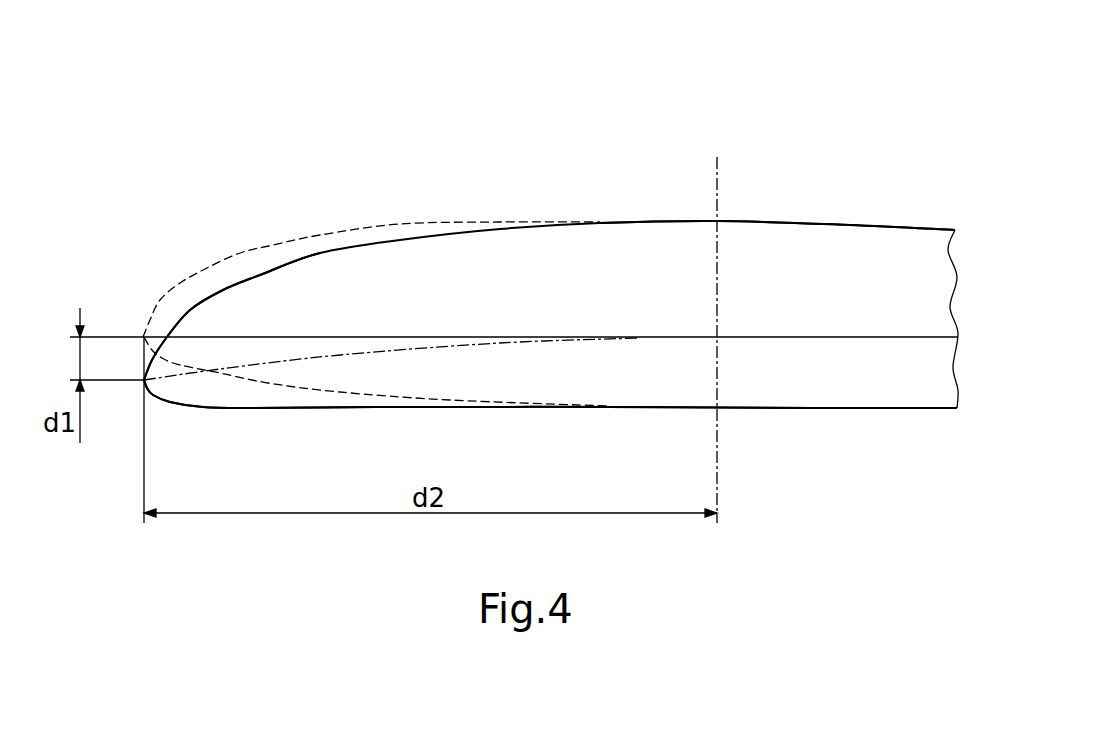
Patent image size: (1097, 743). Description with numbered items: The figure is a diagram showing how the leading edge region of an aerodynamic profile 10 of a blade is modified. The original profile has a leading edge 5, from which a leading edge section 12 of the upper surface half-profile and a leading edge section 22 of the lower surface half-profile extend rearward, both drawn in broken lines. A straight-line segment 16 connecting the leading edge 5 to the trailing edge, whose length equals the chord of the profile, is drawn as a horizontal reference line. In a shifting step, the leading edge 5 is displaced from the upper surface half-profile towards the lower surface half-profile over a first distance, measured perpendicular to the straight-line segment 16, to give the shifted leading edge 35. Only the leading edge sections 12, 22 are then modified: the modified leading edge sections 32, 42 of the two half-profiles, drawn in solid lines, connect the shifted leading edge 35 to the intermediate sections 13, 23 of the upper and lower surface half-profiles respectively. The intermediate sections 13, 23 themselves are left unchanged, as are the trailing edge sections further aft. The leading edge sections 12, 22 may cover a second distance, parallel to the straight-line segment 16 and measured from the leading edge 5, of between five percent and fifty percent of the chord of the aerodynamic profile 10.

The aerodynamic profile 10 is at (634, 164).
The leading edge section of the upper surface half-profile 12 is at (297, 240).
The intermediate section of the upper surface half-profile 13 is at (795, 222).
The straight-line segment 16 is at (373, 336).
The leading edge section of the lower surface half-profile 22 is at (268, 383).
The intermediate section of the lower surface half-profile 23 is at (812, 408).
The modified leading edge section of the upper surface half-profile 32 is at (260, 277).
The shifted leading edge 35 is at (144, 381).
The modified leading edge section of the lower surface half-profile 42 is at (212, 407).
The leading edge 5 is at (143, 337).